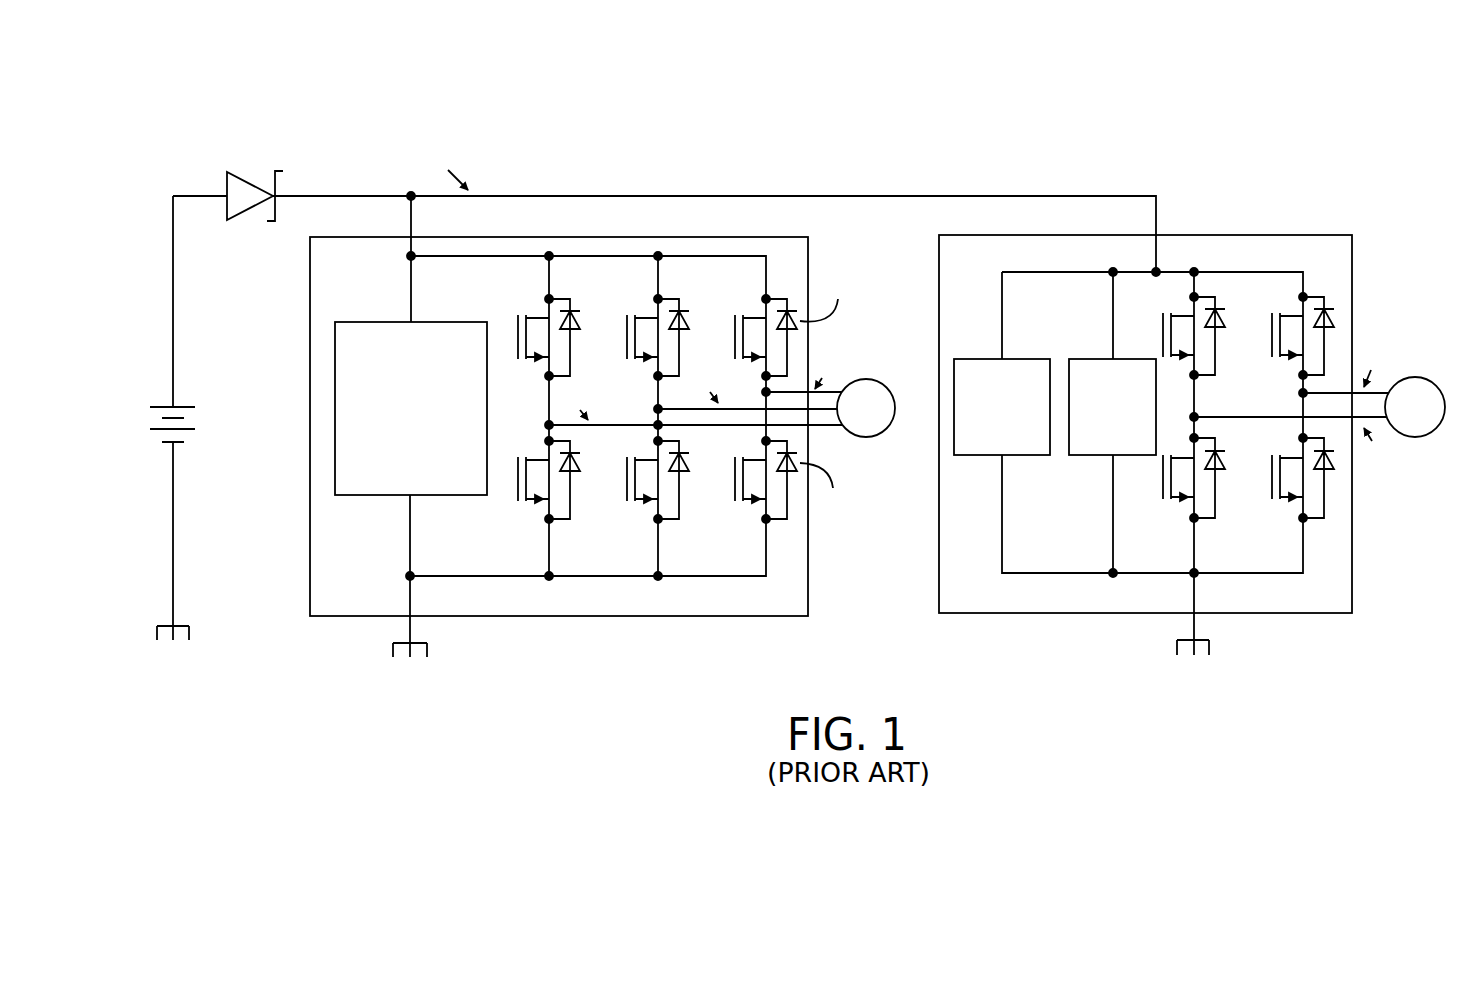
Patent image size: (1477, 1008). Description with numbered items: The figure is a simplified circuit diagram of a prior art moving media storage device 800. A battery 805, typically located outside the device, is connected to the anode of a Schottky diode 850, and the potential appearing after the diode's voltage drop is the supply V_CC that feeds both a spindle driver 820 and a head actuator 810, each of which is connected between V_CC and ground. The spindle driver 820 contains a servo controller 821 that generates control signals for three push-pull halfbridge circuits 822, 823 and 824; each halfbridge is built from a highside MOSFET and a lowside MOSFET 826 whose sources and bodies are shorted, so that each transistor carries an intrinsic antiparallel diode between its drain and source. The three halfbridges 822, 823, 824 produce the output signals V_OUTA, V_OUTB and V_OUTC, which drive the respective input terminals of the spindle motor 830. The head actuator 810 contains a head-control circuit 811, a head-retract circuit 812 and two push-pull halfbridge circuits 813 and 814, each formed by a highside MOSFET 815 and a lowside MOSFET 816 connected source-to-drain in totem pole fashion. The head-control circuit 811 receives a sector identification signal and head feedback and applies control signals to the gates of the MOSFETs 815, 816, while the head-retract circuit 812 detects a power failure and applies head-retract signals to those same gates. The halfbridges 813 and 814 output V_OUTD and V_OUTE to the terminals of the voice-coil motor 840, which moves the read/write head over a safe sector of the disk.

The moving media storage device 800 is at (990, 123).
The battery 805 is at (165, 405).
The head actuator 810 is at (1190, 234).
The head-control circuit 811 is at (1023, 358).
The head-retract circuit 812 is at (1090, 358).
The push-pull halfbridge circuit 813 is at (1225, 290).
The push-pull halfbridge circuit 814 is at (1331, 290).
The highside MOSFET 815 is at (1185, 316).
The lowside MOSFET 816 is at (1188, 500).
The spindle driver 820 is at (310, 500).
The servo controller 821 is at (385, 320).
The push-pull halfbridge circuit 822 is at (573, 282).
The push-pull halfbridge circuit 823 is at (681, 282).
The push-pull halfbridge circuit 824 is at (789, 280).
The lowside MOSFET 826 is at (570, 540).
The spindle motor 830 is at (888, 389).
The voice-coil motor 840 is at (1440, 385).
The Schottky diode 850 is at (248, 175).